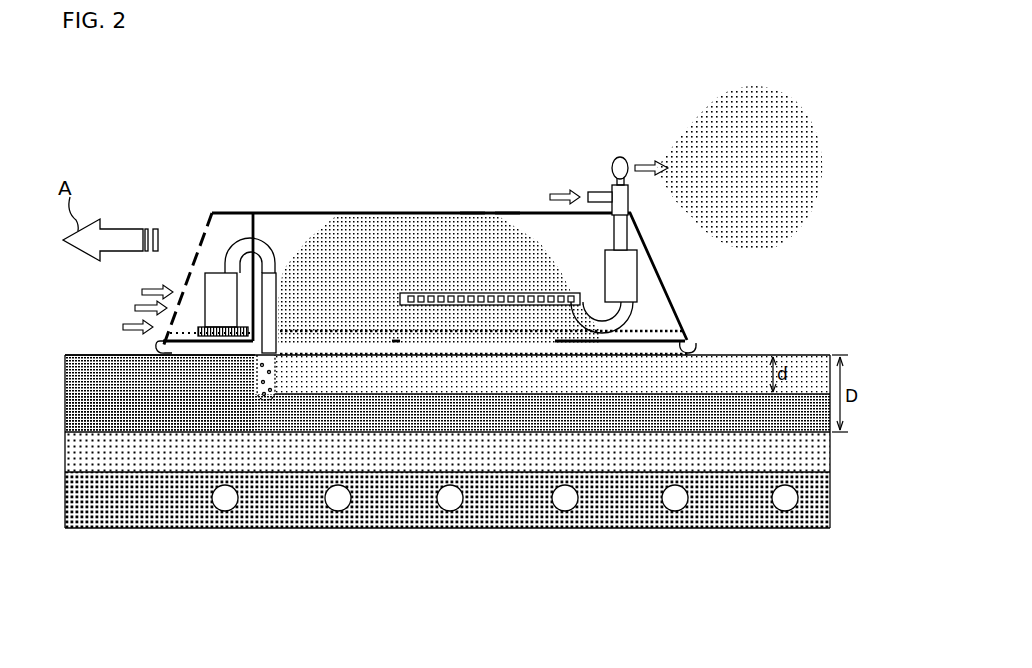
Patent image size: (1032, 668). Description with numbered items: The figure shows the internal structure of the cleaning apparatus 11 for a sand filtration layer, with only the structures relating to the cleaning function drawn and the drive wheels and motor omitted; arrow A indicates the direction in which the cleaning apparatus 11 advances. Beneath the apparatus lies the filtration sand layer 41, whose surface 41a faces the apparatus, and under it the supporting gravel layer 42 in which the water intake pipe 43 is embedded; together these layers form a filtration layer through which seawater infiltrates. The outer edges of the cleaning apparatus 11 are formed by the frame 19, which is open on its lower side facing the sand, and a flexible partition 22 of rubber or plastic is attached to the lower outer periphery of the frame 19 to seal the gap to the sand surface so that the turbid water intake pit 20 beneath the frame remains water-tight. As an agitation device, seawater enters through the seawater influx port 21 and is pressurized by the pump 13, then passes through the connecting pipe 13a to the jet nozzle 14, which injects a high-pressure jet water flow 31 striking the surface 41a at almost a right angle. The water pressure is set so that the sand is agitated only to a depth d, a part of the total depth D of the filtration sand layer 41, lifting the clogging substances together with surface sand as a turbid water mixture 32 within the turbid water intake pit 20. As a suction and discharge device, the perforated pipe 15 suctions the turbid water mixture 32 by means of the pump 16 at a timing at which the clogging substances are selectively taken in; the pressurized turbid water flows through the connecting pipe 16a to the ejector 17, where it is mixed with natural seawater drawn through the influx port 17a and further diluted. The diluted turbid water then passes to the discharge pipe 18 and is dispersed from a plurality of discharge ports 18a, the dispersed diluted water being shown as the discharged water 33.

The cleaning apparatus 11 is at (375, 210).
The pump 13 is at (215, 287).
The connecting pipe 13a is at (243, 247).
The jet nozzle 14 is at (272, 320).
The perforated pipe 15 is at (447, 300).
The pump 16 is at (620, 277).
The connecting pipe 16a is at (618, 230).
The ejector 17 is at (630, 197).
The influx port 17a is at (600, 193).
The discharge pipe 18 is at (612, 163).
The discharge ports 18a is at (621, 157).
The frame 19 is at (473, 210).
The turbid water intake pit 20 is at (522, 228).
The seawater influx port 21 is at (184, 287).
The partition 22 is at (160, 348).
The jet water flow 31 is at (263, 382).
The turbid water mixture 32 is at (342, 240).
The discharged water 33 is at (787, 117).
The filtration sand layer 41 is at (80, 397).
The surface 41a is at (78, 357).
The supporting gravel layer 42 is at (60, 435).
The water intake pipe 43 is at (335, 502).